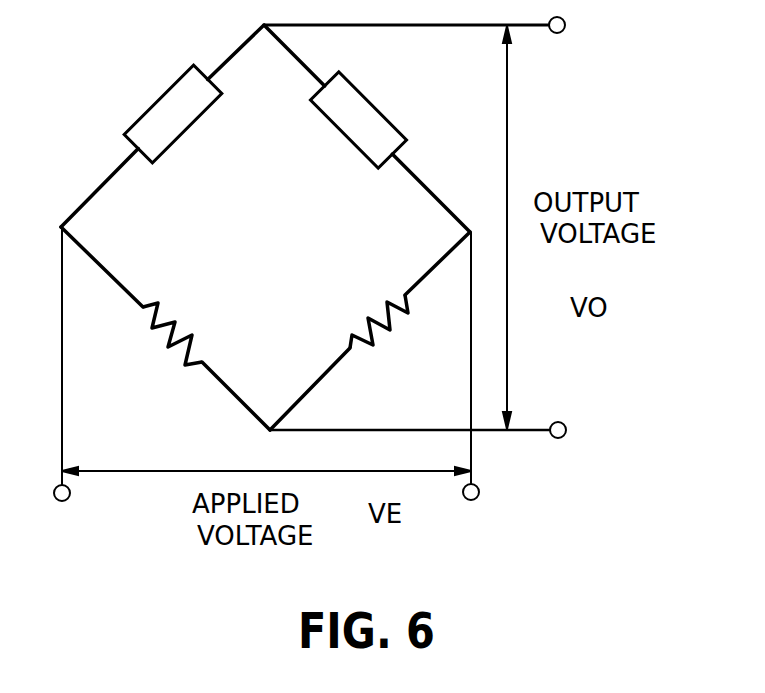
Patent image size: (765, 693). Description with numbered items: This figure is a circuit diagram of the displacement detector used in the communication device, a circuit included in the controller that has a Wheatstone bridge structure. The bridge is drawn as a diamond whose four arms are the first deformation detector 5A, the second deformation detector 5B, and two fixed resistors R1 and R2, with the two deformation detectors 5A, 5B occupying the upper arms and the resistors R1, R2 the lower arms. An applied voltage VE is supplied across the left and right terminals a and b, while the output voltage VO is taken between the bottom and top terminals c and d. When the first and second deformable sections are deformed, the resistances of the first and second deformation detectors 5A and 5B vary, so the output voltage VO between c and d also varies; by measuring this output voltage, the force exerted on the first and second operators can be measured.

The first deformation detector 5A is at (156, 114).
The second deformation detector 5B is at (371, 120).
The bridge resistor R1 is at (157, 340).
The bridge resistor R2 is at (387, 339).
The input terminal a is at (61, 511).
The input terminal b is at (472, 511).
The output terminal c is at (573, 431).
The output terminal d is at (573, 23).